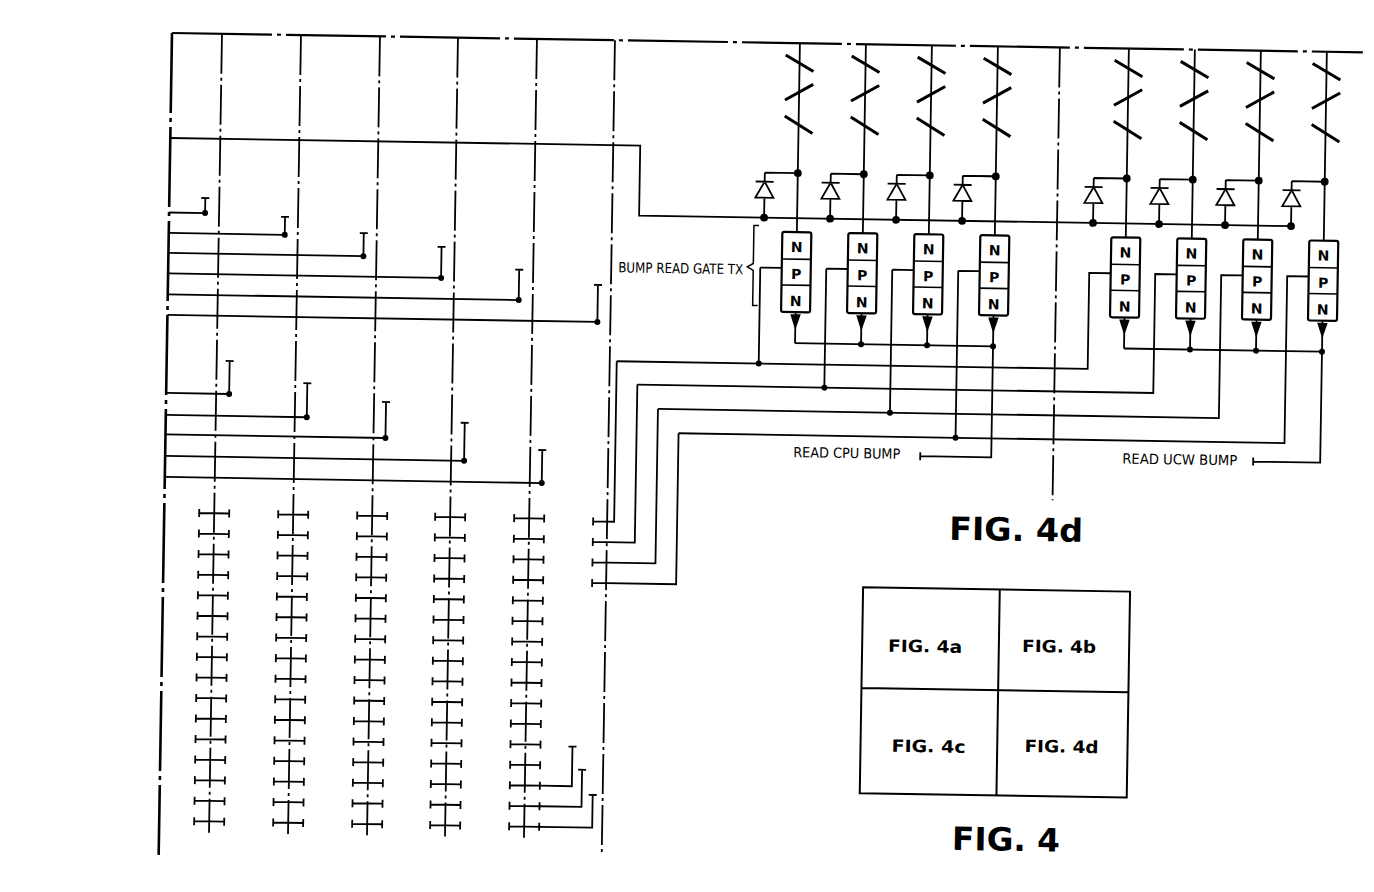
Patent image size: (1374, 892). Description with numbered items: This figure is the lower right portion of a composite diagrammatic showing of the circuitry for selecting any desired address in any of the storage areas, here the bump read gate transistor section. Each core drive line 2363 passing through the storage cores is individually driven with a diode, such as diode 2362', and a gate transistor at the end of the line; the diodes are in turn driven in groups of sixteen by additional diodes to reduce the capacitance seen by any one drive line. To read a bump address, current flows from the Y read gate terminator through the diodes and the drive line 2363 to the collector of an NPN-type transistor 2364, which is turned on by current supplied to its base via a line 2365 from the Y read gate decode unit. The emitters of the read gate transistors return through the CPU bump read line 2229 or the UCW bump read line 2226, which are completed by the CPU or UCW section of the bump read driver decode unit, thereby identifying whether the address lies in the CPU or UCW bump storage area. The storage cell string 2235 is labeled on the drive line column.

The bump storage cell string 2235 is at (1010, 62).
The drive line 2363 is at (1002, 155).
The unique diode 2362' is at (998, 199).
The NPN-type transistor 2364 is at (1013, 258).
The base line 2365 is at (962, 408).
The CPU bump read line 2229 is at (982, 446).
The UCW bump read line 2226 is at (1316, 446).